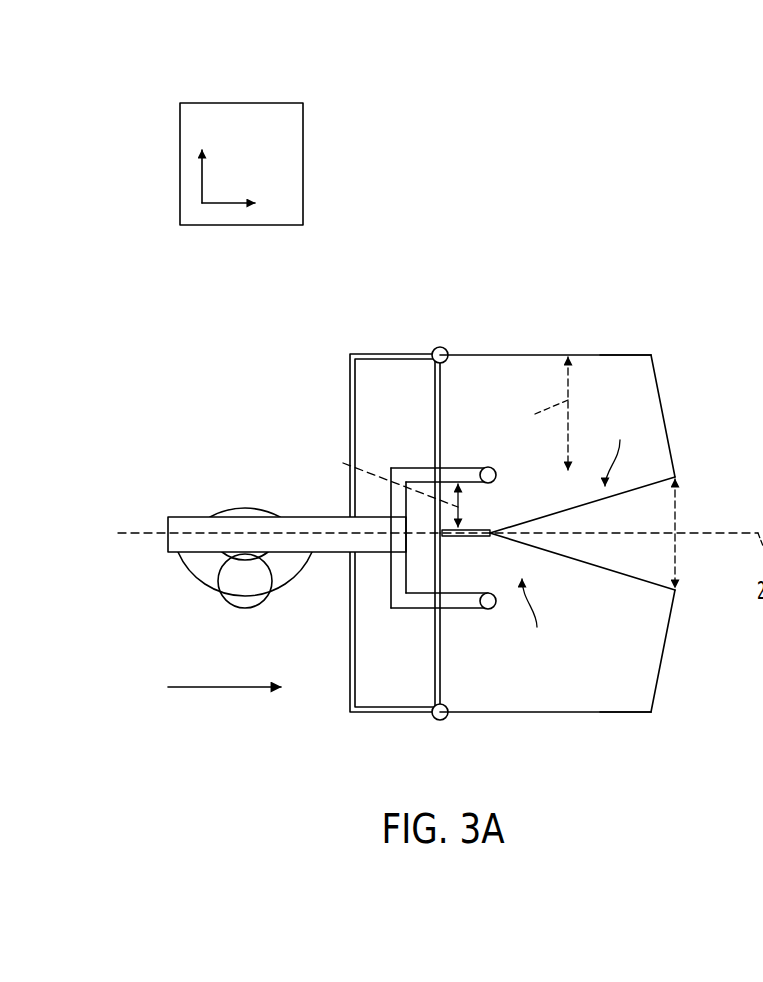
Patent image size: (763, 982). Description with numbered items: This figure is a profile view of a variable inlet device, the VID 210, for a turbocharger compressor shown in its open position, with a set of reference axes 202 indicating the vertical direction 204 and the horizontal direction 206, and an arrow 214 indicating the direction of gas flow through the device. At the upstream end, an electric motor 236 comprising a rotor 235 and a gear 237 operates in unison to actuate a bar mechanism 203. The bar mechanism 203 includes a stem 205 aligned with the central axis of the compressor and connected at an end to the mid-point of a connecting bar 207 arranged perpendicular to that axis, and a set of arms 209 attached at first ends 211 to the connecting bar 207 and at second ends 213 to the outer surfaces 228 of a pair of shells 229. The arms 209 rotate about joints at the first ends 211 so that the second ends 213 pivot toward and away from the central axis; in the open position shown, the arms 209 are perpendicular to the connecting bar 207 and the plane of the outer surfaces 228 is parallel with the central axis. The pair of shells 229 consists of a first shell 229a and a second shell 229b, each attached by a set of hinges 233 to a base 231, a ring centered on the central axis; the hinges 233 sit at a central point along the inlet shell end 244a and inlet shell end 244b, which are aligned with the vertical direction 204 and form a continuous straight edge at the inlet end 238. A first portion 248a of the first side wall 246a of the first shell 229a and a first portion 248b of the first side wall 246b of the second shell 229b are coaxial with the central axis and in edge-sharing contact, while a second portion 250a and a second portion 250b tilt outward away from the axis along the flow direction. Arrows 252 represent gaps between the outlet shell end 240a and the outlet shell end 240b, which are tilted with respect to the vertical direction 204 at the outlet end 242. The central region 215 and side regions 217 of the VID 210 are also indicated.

The set of reference axes 202 is at (259, 151).
The vertical direction 204 is at (207, 170).
The horizontal direction 206 is at (230, 203).
The bar mechanism 203 is at (208, 572).
The stem 205 is at (348, 548).
The connecting bar 207 is at (403, 594).
The set of arms 209 is at (399, 533).
The variable inlet device 210 is at (601, 502).
The first ends 211 is at (402, 467).
The second ends 213 is at (486, 467).
The arrow 214 is at (215, 688).
The central region 215 is at (538, 415).
The side regions 217 is at (385, 478).
The outer surfaces 228 is at (627, 353).
The pair of shells 229 is at (590, 503).
The first shell 229a is at (568, 348).
The second shell 229b is at (515, 720).
The base 231 is at (370, 697).
The set of hinges 233 is at (439, 347).
The rotor 235 is at (175, 560).
The electric motor 236 is at (177, 638).
The gear 237 is at (207, 593).
The inlet end 238 is at (425, 387).
The outlet shell end 240a is at (667, 428).
The outlet shell end 240b is at (662, 662).
The outlet end 242 is at (699, 571).
The inlet shell end 244a is at (442, 394).
The inlet shell end 244b is at (442, 677).
The first side wall 246a is at (618, 449).
The first side wall 246b is at (537, 617).
The first portion 248a is at (478, 530).
The first portion 248b is at (478, 537).
The second portion 250a is at (551, 514).
The second portion 250b is at (573, 560).
The gaps 252 is at (683, 522).